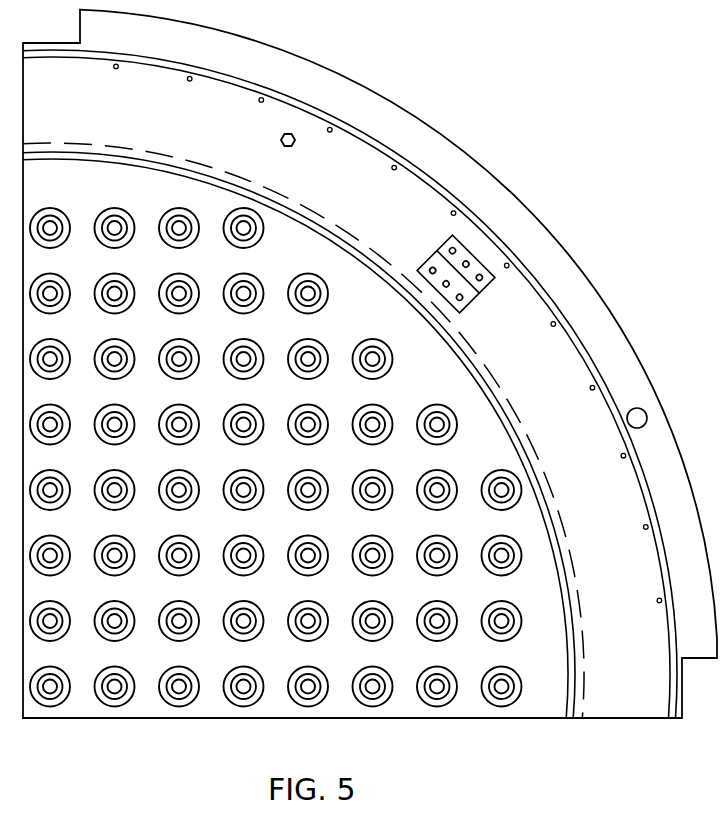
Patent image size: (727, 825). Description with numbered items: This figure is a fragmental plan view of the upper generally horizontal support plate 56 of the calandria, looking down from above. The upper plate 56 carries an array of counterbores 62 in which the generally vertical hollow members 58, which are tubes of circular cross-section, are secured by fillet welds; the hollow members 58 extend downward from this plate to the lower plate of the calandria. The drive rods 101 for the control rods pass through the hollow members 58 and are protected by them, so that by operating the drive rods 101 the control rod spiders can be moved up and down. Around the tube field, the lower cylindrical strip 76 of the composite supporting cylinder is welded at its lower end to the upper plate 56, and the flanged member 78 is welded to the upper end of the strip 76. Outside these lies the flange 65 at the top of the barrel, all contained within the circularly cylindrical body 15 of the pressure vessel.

The circularly cylindrical body 15 is at (376, 93).
The upper support plate 56 is at (528, 718).
The hollow members 58 is at (303, 300).
The counterbores 62 is at (242, 245).
The flange 65 is at (245, 106).
The lower cylindrical strip 76 is at (577, 706).
The flanged member 78 is at (697, 643).
The drive rods 101 is at (114, 228).